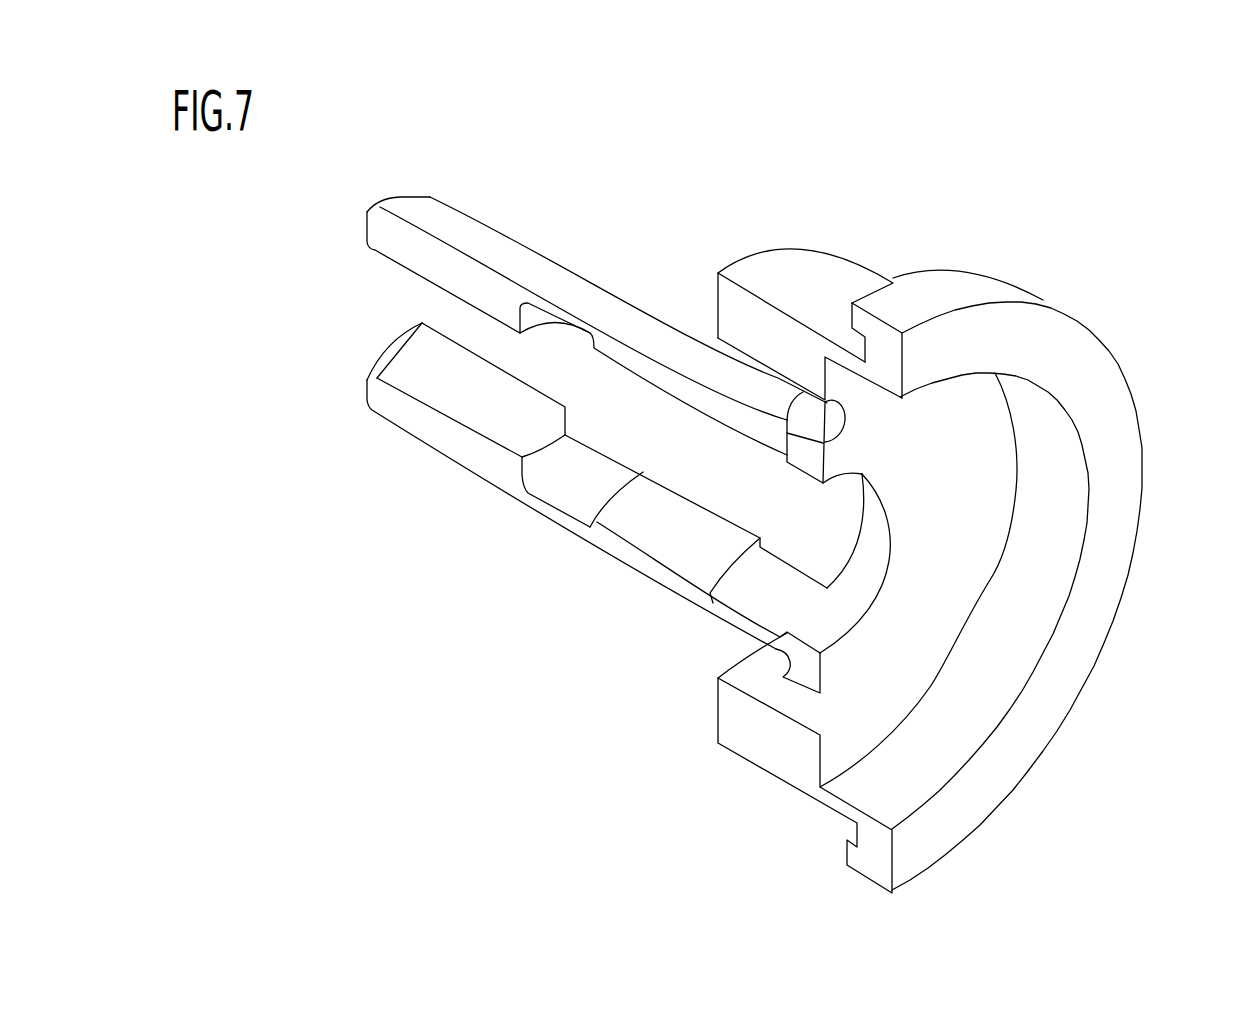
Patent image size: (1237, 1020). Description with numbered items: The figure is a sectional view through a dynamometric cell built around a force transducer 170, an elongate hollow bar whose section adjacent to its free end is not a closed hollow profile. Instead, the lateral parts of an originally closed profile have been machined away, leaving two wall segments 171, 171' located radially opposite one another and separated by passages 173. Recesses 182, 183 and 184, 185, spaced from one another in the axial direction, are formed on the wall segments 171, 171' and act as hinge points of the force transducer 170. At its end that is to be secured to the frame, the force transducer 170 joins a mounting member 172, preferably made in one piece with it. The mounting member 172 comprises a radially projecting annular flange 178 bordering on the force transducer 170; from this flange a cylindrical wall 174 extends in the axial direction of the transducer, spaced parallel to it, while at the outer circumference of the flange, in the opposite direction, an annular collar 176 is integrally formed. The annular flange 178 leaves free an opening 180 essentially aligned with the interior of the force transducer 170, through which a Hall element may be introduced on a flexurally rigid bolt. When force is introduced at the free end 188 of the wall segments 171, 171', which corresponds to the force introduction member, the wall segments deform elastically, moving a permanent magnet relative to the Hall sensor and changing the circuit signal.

The force transducer 170 is at (707, 232).
The wall segment 171 is at (597, 273).
The wall segment 171' is at (561, 508).
The mounting member 172 is at (1067, 254).
The passage 173 is at (645, 434).
The cylindrical wall 174 is at (810, 268).
The annular collar 176 is at (1110, 591).
The annular flange 178 is at (957, 440).
The opening 180 is at (872, 605).
The recess 182 is at (767, 603).
The recess 183 is at (590, 499).
The recess 184 is at (556, 345).
The recess 185 is at (715, 407).
The free end 188 is at (333, 305).